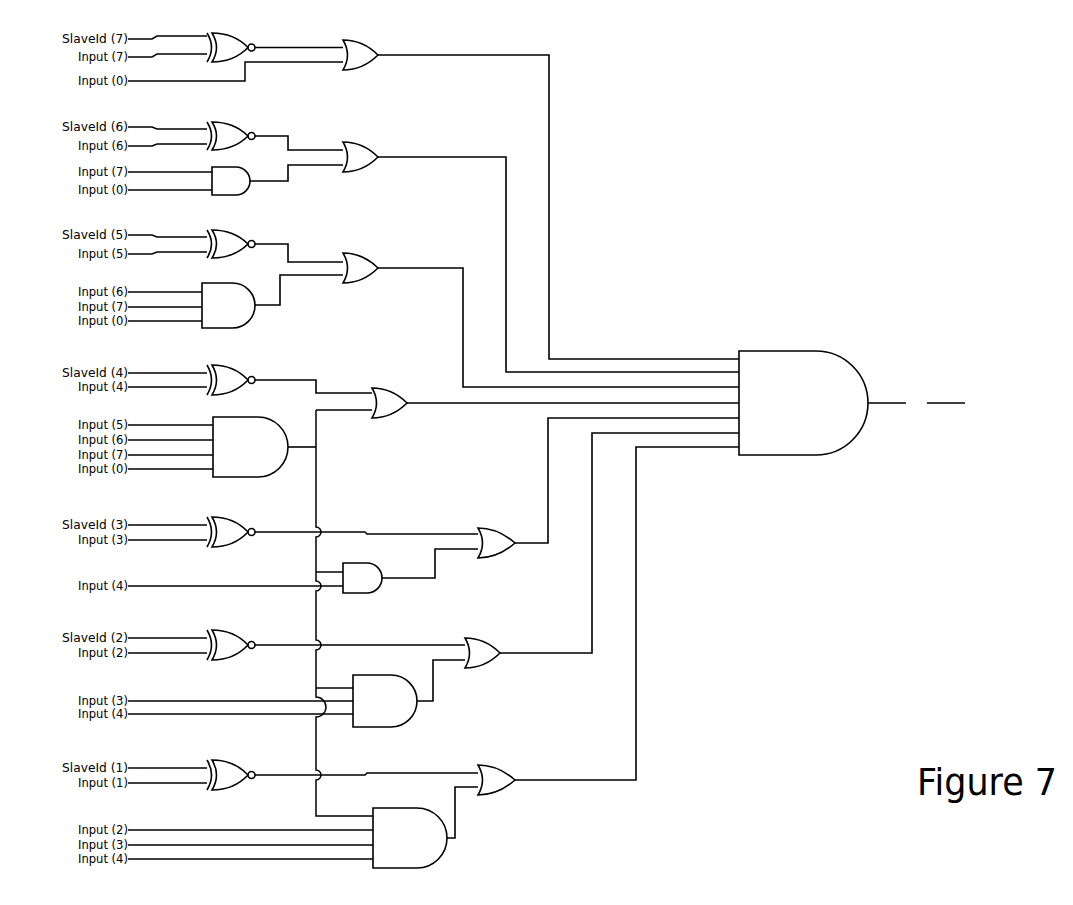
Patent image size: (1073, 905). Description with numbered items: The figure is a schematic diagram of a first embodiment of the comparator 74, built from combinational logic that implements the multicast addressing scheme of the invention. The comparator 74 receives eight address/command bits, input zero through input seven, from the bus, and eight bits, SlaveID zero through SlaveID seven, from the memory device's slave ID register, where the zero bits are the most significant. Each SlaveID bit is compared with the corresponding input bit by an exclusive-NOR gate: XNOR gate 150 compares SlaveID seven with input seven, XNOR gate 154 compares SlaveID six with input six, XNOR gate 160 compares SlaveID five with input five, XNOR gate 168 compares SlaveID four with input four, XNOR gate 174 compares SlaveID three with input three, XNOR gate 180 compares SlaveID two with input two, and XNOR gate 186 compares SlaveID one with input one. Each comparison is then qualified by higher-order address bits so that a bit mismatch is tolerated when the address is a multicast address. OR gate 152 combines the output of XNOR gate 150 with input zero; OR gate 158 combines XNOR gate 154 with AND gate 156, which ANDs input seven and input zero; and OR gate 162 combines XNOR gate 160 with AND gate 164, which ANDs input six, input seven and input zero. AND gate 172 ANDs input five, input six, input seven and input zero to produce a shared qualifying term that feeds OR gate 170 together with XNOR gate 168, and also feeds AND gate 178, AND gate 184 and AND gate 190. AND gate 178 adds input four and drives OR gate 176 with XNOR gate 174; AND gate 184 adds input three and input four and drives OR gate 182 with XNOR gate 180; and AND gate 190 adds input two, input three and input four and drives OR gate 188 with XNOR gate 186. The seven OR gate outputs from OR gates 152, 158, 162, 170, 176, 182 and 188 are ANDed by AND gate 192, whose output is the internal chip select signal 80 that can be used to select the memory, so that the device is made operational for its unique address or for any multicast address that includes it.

The comparator 74 is at (714, 223).
The internal chip select signal 80 is at (951, 403).
The XNOR gate 150 is at (275, 47).
The OR gate 152 is at (541, 199).
The XNOR gate 154 is at (275, 136).
The AND gate 156 is at (277, 180).
The OR gate 158 is at (541, 257).
The XNOR gate 160 is at (275, 246).
The OR gate 162 is at (541, 320).
The AND gate 164 is at (272, 301).
The XNOR gate 168 is at (289, 380).
The OR gate 170 is at (555, 403).
The AND gate 172 is at (264, 447).
The XNOR gate 174 is at (342, 532).
The OR gate 176 is at (608, 488).
The AND gate 178 is at (410, 571).
The XNOR gate 180 is at (336, 645).
The OR gate 182 is at (602, 550).
The AND gate 184 is at (409, 693).
The XNOR gate 186 is at (342, 775).
The OR gate 188 is at (608, 621).
The AND gate 190 is at (425, 827).
The AND gate 192 is at (803, 403).